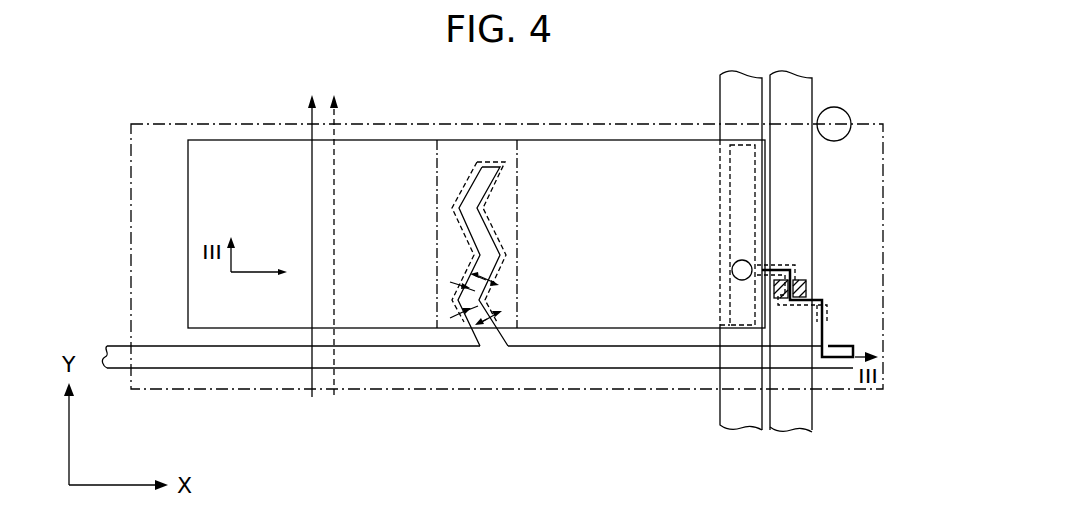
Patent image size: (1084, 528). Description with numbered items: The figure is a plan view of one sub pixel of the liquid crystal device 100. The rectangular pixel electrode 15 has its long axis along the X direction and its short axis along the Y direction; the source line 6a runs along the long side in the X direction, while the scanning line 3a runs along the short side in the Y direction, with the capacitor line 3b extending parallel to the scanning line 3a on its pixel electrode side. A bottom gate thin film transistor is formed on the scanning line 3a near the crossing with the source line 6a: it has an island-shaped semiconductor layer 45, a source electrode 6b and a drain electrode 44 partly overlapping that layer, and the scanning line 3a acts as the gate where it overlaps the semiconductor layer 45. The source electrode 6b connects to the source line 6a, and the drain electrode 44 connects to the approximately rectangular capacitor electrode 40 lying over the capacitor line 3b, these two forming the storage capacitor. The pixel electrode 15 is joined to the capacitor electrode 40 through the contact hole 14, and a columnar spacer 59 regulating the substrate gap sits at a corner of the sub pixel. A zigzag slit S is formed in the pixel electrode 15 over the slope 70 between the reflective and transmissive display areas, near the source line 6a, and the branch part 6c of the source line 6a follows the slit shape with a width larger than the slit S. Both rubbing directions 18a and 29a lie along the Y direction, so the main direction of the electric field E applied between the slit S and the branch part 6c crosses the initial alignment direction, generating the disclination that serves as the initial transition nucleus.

The liquid crystal device 100 is at (627, 83).
The pixel electrode 15 is at (225, 140).
The rubbing direction 29a is at (312, 183).
The rubbing direction 18a is at (338, 177).
The slope 70 is at (518, 177).
The branch part 6c is at (480, 162).
The slit S is at (468, 224).
The electric field E is at (494, 282).
The source line 6a is at (850, 370).
The capacitor line 3b is at (735, 92).
The scanning line 3a is at (790, 86).
The capacitor electrode 40 is at (748, 200).
The columnar spacer 59 is at (846, 118).
The contact hole 14 is at (735, 264).
The source electrode 6b is at (810, 312).
The drain electrode 44 is at (797, 278).
The semiconductor layer 45 is at (805, 290).